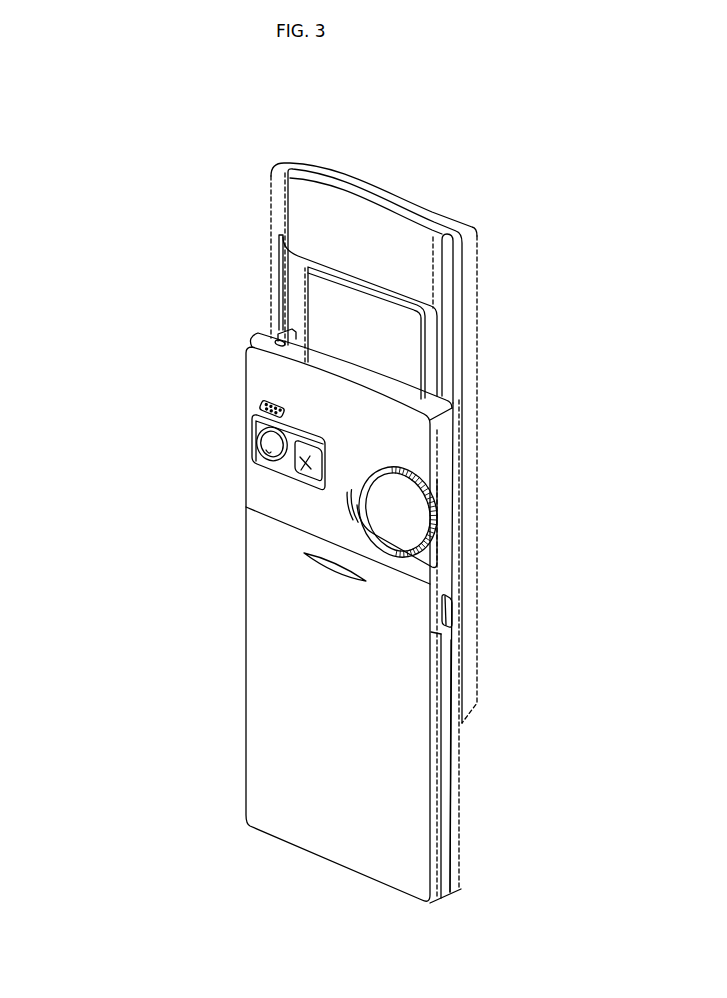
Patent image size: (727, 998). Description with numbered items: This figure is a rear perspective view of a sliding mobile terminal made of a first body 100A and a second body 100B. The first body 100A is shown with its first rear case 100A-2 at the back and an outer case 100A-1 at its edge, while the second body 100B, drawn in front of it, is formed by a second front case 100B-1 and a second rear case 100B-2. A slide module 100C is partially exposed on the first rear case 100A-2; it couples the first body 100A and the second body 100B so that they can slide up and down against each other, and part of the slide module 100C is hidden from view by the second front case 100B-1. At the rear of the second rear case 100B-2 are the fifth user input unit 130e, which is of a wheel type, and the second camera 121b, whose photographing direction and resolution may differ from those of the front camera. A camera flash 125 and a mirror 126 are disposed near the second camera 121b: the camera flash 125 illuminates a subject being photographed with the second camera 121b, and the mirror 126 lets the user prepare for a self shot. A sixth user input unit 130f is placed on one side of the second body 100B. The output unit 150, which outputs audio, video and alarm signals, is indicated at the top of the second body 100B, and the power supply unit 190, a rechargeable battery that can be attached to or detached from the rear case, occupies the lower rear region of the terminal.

The first body 100A is at (275, 485).
The rear body back cover 100A-1 is at (326, 168).
The first rear case 100A-2 is at (299, 172).
The slide module 100C is at (331, 303).
The second body 100B is at (308, 613).
The second front case 100B-1 is at (456, 768).
The second rear case 100B-2 is at (446, 813).
The output unit 150 is at (281, 343).
The camera flash 125 is at (263, 407).
The second camera 121b is at (264, 445).
The mirror 126 is at (303, 463).
The power supply unit 190 is at (278, 674).
The fifth user input unit 130e is at (440, 525).
The sixth user input unit 130f is at (455, 607).